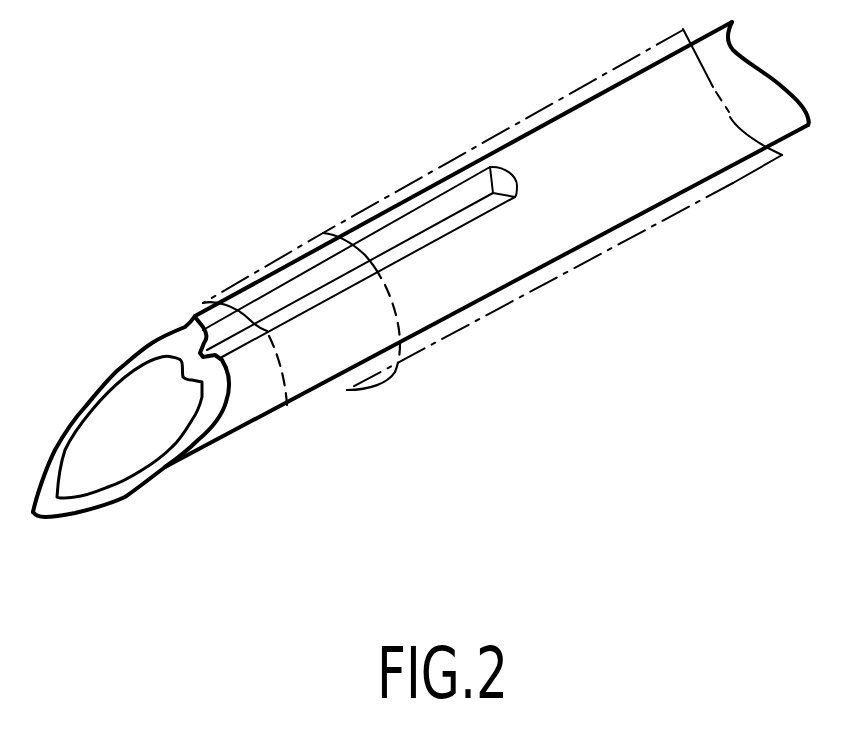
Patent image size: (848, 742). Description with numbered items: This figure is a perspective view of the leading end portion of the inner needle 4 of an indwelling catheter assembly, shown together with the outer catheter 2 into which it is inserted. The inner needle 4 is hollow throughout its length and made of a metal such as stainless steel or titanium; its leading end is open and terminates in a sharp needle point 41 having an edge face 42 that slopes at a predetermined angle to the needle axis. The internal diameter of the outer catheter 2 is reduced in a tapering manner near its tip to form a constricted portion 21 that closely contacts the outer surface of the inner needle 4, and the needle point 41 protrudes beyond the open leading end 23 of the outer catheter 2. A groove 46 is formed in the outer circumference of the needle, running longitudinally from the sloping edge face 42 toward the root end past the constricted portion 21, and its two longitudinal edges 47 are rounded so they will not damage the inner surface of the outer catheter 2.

The outer catheter 2 is at (612, 250).
The inner needle 4 is at (713, 160).
The constricted portion 21 is at (370, 387).
The leading end 23 is at (203, 302).
The needle point 41 is at (128, 498).
The edge face 42 is at (88, 407).
The groove 46 is at (307, 284).
The edges 47 is at (480, 217).